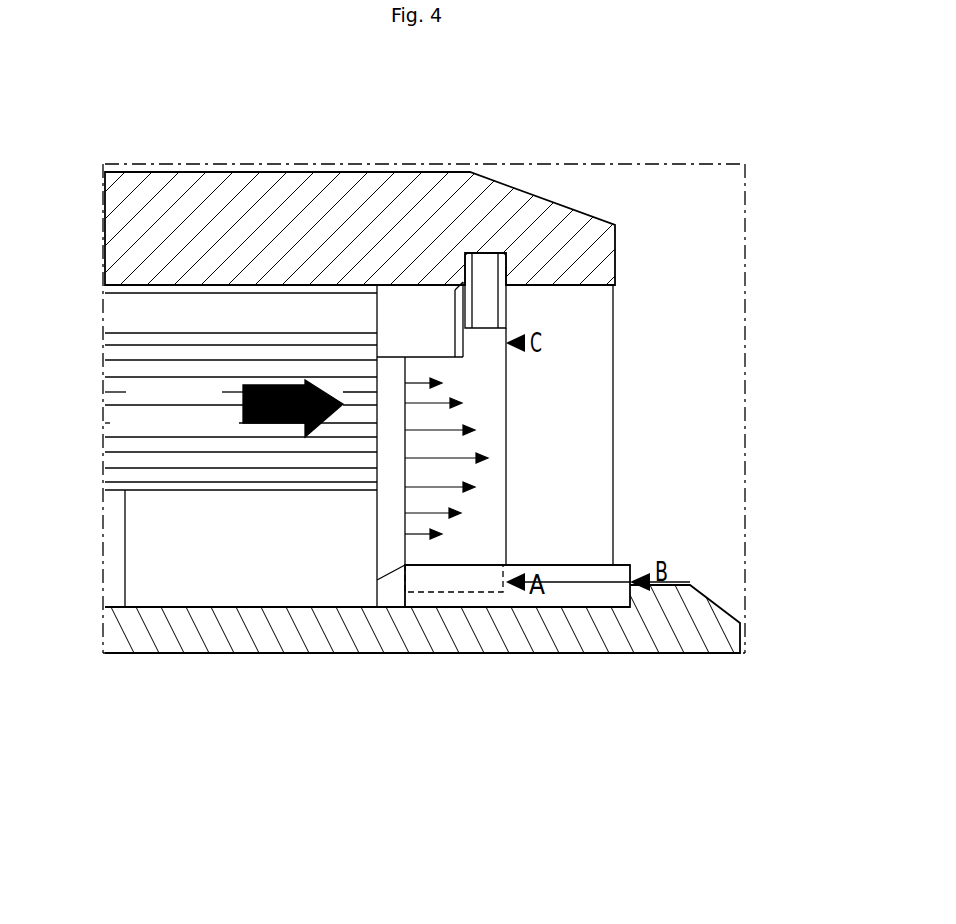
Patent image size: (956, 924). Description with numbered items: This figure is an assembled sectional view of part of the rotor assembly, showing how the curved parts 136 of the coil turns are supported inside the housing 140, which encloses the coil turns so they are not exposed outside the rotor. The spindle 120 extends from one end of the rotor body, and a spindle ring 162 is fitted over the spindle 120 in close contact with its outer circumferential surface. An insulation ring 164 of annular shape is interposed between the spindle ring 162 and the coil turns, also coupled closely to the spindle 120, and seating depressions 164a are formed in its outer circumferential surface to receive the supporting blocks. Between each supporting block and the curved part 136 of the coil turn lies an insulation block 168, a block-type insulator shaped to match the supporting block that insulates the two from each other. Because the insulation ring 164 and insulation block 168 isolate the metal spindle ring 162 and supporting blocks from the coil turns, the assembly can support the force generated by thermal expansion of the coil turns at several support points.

The spindle 120 is at (683, 633).
The curved parts 136 is at (147, 442).
The housing 140 is at (272, 207).
The spindle ring 162 is at (598, 600).
The insulation ring 164 is at (395, 595).
The seating depressions 164a is at (457, 592).
The insulation block 168 is at (383, 525).